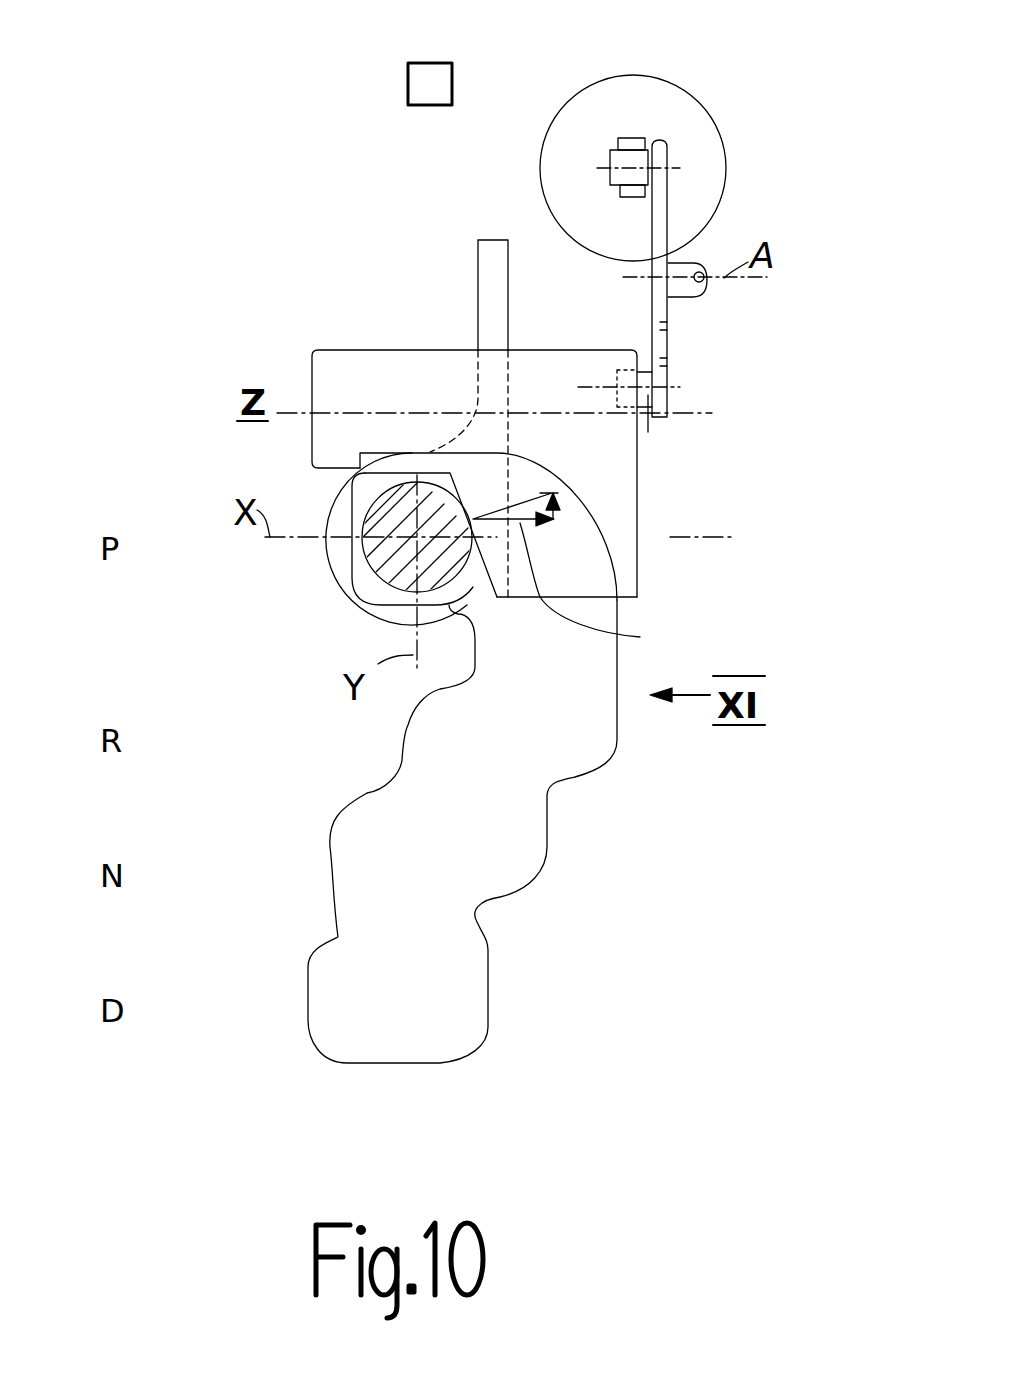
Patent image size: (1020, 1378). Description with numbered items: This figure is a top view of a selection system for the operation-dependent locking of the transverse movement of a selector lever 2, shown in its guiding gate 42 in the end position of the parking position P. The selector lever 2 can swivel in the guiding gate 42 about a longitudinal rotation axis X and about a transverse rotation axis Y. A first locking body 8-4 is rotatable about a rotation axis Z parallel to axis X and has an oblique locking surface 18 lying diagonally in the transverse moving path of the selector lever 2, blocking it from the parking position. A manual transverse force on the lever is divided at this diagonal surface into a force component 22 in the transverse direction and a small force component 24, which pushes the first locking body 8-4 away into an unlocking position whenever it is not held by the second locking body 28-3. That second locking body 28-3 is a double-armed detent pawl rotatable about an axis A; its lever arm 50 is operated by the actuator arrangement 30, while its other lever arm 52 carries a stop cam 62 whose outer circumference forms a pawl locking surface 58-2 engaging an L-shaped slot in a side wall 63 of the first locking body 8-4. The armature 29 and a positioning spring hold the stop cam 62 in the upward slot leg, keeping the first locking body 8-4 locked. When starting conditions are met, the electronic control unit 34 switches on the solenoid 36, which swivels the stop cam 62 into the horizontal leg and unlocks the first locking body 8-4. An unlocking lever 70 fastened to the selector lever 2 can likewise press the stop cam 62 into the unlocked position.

The selector lever 2 is at (393, 530).
The first locking body 8-4 is at (330, 350).
The oblique locking surface 18 is at (442, 603).
The force component 22 is at (640, 637).
The force component 24 is at (560, 515).
The second locking body 28-3 is at (665, 330).
The armature 29 is at (630, 137).
The actuator arrangement 30 is at (660, 130).
The electronic control unit 34 is at (408, 90).
The solenoid 36 is at (675, 115).
The guiding gate 42 is at (505, 825).
The lever arm 50 is at (665, 216).
The lever arm 52 is at (667, 362).
The pawl locking surface 58-2 is at (646, 372).
The stop cam 62 is at (648, 432).
The side wall 63 is at (637, 587).
The unlocking lever 70 is at (487, 270).